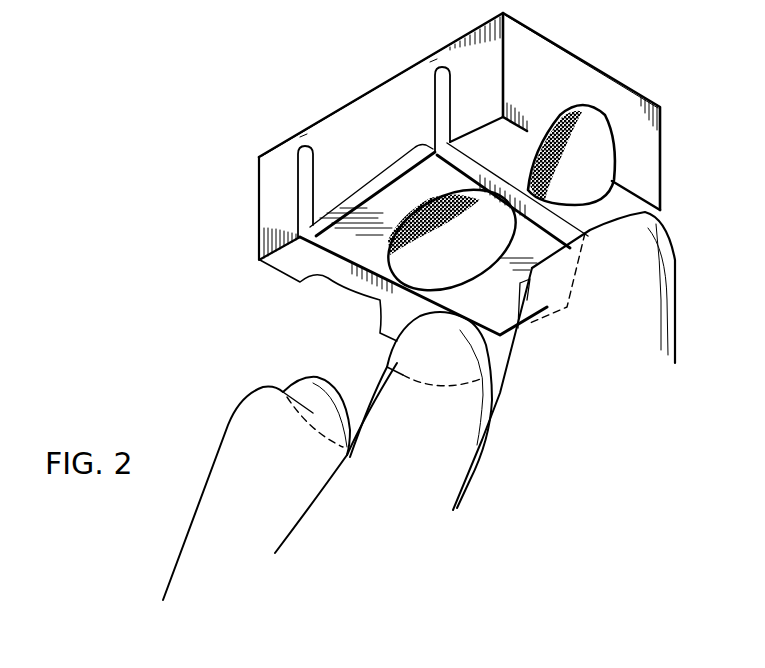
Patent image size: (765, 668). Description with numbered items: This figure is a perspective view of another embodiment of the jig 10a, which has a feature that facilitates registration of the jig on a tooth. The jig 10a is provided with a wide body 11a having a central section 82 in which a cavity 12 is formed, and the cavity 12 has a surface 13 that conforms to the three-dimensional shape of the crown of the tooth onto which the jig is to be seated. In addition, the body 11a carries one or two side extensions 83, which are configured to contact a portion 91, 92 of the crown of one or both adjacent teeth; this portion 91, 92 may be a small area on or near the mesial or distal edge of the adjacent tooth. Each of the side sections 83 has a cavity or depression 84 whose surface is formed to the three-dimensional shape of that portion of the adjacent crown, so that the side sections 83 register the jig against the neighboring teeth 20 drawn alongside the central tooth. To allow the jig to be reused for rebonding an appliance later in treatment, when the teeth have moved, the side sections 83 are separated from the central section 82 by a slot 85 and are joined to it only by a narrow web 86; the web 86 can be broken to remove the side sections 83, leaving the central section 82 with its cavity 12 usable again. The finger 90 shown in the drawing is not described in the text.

The jig 10a is at (620, 80).
The wide body 11a is at (362, 97).
The cavity 12 is at (462, 282).
The surface 13 is at (474, 266).
The finger 20 is at (493, 382).
The central section 82 is at (369, 172).
The side extension 83 is at (272, 205).
The depression 84 is at (582, 148).
The slot 85 is at (298, 178).
The narrow web 86 is at (301, 131).
The finger 90 is at (435, 385).
The portion of the crown of an adjacent tooth 91 is at (577, 280).
The portion of the crown of an adjacent tooth 92 is at (313, 437).